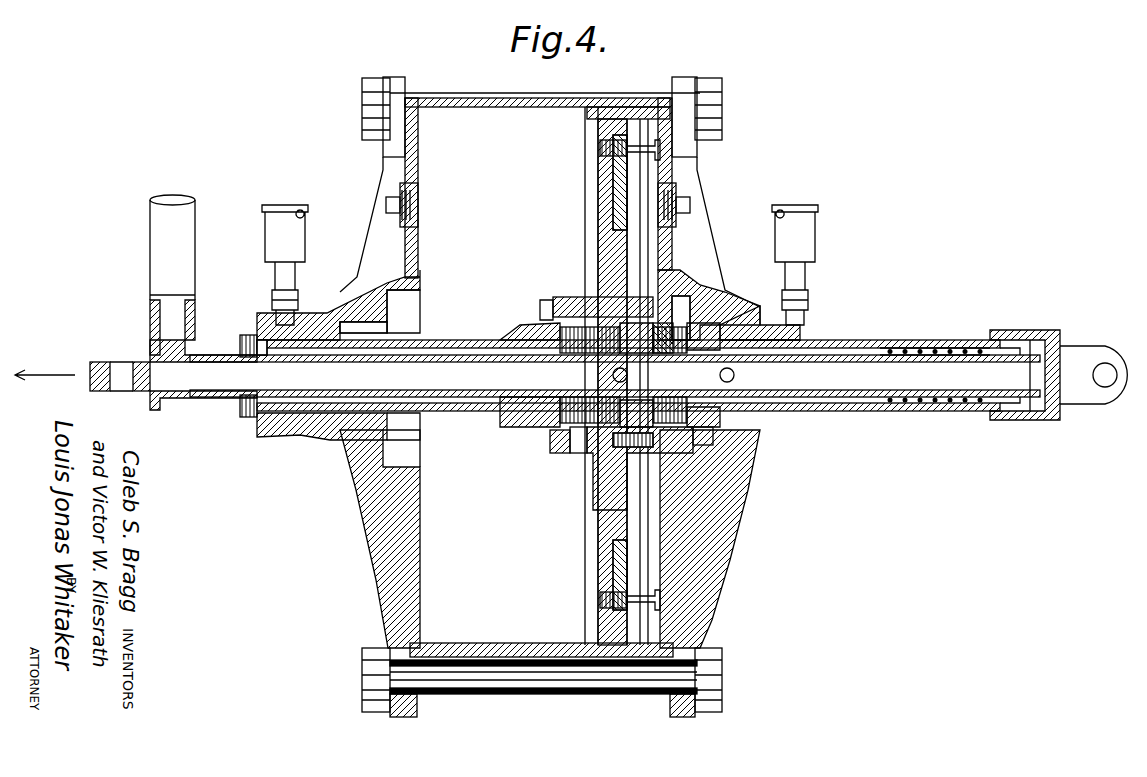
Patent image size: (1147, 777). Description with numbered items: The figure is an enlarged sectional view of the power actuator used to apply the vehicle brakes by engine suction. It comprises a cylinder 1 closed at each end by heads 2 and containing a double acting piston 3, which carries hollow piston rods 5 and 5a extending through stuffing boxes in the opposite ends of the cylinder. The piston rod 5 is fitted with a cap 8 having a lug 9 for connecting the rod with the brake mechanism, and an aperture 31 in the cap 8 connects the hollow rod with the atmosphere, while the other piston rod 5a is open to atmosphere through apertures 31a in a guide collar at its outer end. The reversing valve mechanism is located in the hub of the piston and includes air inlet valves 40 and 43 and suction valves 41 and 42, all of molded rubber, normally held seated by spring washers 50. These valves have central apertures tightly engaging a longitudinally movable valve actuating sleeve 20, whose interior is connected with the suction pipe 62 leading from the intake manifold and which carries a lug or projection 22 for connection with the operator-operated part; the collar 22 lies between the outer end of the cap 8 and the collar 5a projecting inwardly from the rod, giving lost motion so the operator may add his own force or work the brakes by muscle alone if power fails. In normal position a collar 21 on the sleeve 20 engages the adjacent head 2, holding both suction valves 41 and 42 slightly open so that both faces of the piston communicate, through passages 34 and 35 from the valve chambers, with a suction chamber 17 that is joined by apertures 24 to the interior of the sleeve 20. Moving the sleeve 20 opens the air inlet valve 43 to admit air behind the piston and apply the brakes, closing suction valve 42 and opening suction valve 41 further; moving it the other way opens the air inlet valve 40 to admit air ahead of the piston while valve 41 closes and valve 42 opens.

The cylinder 1 is at (468, 110).
The heads 2 is at (417, 172).
The piston 3 is at (607, 223).
The piston rod 5 is at (863, 339).
The piston rod 5a is at (457, 341).
The cap 8 is at (1017, 334).
The lug 9 is at (1117, 403).
The suction chamber 17 is at (617, 405).
The valve actuating sleeve 20 is at (468, 398).
The collar 21 is at (247, 417).
The lug or projection 22 is at (100, 363).
The apertures 24 is at (613, 375).
The aperture 31 is at (1070, 373).
The apertures 31a is at (282, 345).
The passage 34 is at (575, 453).
The passage 35 is at (663, 325).
The air inlet valve 40 is at (545, 320).
The suction valve 41 is at (585, 300).
The suction valve 42 is at (668, 298).
The air inlet valve 43 is at (722, 301).
The spring washers 50 is at (560, 450).
The suction pipe 62 is at (190, 241).